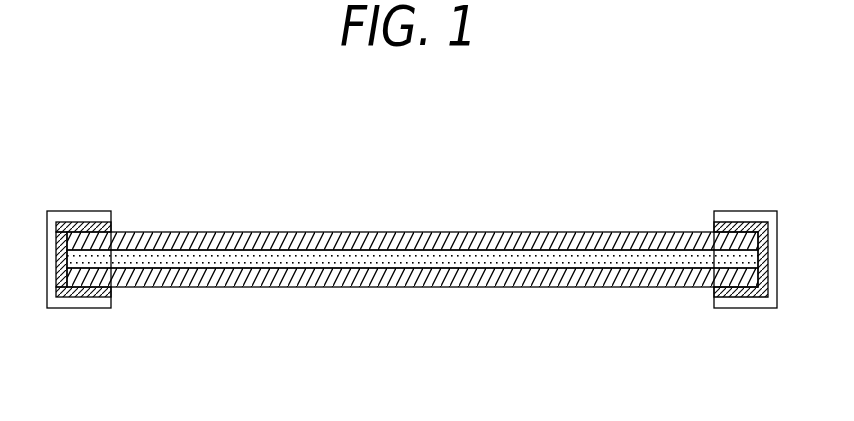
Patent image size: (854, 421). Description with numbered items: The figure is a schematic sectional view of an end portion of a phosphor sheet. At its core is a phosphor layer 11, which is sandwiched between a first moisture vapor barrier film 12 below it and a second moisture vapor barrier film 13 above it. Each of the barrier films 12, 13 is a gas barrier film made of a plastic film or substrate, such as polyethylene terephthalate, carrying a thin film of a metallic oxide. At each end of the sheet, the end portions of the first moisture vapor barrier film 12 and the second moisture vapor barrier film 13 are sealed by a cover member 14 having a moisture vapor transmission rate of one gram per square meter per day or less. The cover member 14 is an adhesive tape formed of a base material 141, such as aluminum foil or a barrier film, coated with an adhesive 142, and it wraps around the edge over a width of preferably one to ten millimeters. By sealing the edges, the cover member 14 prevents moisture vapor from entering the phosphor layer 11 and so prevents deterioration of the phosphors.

The phosphor layer 11 is at (604, 262).
The first moisture vapor barrier film 12 is at (662, 288).
The second moisture vapor barrier film 13 is at (661, 232).
The cover member 14 is at (765, 205).
The base material 141 is at (110, 216).
The adhesive 142 is at (110, 297).